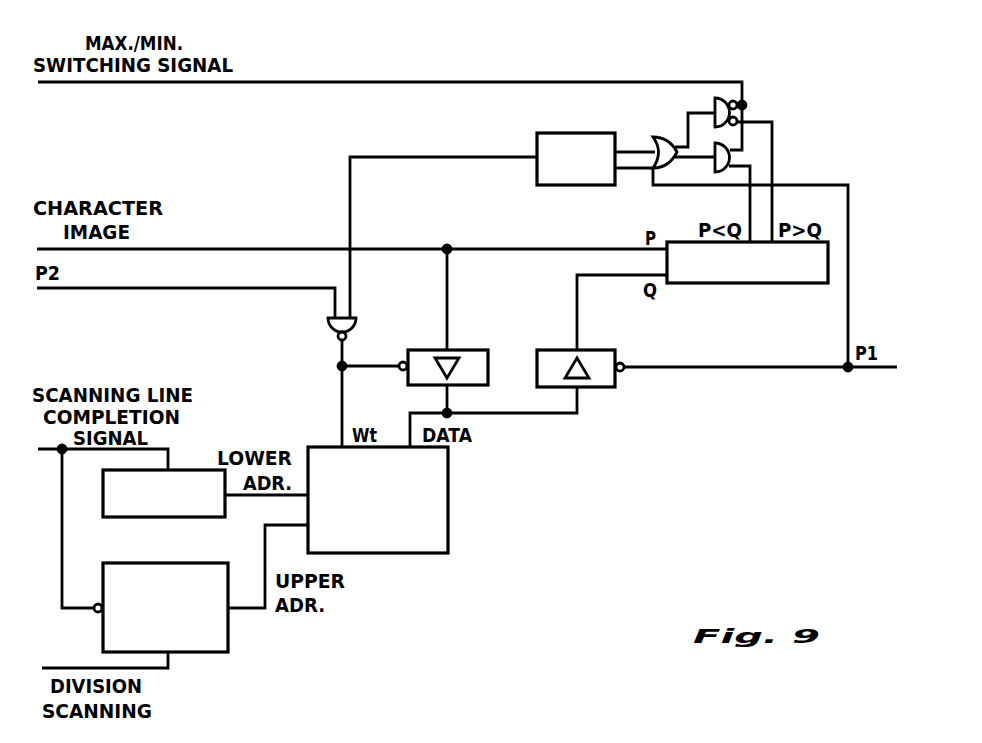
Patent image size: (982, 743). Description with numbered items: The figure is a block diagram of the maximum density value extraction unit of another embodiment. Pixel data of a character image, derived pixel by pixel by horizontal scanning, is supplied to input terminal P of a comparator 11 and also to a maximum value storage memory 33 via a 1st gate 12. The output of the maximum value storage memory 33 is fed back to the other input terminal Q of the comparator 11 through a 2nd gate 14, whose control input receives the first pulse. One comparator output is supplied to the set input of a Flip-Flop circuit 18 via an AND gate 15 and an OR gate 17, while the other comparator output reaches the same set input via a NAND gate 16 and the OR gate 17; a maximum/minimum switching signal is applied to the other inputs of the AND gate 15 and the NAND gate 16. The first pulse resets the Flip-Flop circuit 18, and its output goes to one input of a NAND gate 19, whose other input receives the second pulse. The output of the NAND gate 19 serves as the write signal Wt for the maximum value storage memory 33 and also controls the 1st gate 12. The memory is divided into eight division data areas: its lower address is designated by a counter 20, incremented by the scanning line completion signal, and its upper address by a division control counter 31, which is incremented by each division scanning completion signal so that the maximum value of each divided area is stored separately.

The comparator 11 is at (747, 285).
The 1st gate 12 is at (443, 348).
The 2nd gate 14 is at (572, 349).
The AND gate 15 is at (706, 164).
The NAND gate 16 is at (717, 89).
The OR gate 17 is at (650, 136).
The Flip-Flop circuit 18 is at (566, 139).
The NAND gate 19 is at (322, 332).
The counter 20 is at (168, 513).
The division control counter 31 is at (164, 629).
The maximum value storage memory 33 is at (381, 521).